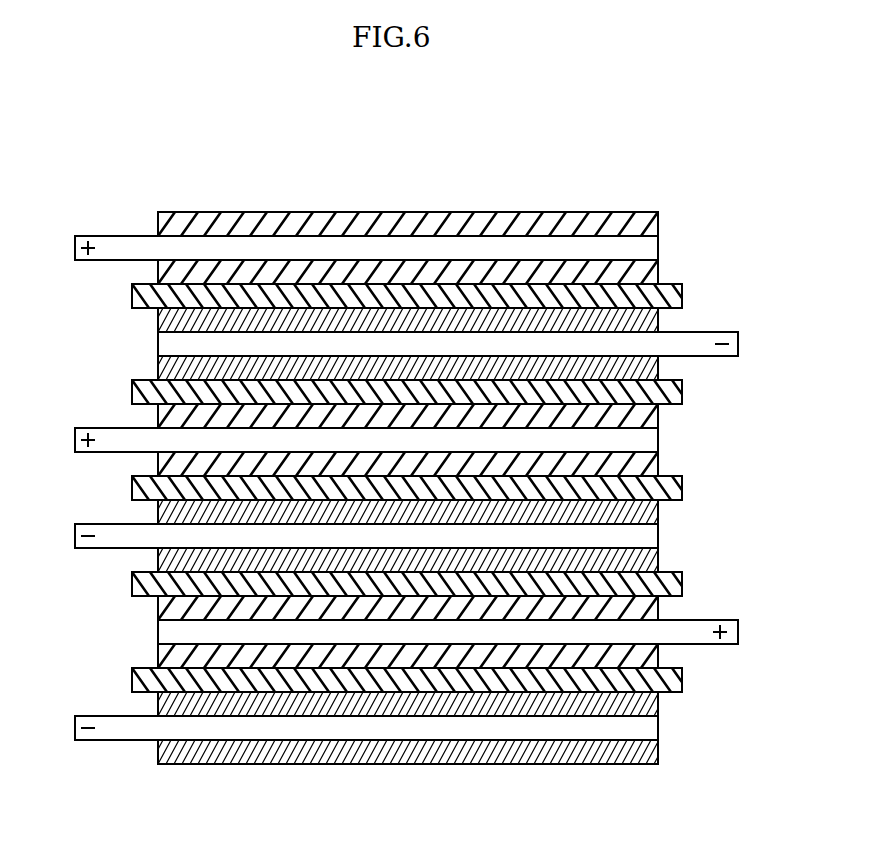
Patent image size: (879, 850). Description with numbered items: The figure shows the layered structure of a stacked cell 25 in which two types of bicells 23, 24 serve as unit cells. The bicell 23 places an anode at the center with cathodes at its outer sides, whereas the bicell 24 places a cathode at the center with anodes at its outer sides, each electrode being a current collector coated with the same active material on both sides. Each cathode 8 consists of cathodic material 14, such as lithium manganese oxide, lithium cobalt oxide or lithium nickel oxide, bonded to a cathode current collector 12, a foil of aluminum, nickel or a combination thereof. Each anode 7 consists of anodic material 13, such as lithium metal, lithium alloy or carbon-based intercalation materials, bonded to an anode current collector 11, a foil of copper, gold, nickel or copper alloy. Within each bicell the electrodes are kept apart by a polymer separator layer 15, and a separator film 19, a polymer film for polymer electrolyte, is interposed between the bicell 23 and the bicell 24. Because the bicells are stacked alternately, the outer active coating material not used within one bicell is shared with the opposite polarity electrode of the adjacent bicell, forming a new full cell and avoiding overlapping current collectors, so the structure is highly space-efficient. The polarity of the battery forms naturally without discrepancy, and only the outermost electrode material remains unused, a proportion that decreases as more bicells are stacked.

The anode 7 is at (808, 302).
The cathode 8 is at (738, 212).
The anode current collector 11 is at (740, 352).
The cathode current collector 12 is at (655, 248).
The anodic material 13 is at (660, 321).
The cathodic material 14 is at (658, 219).
The separator layer 15 is at (133, 296).
The separator film 19 is at (133, 493).
The bicell 23 is at (62, 213).
The bicell 24 is at (62, 503).
The stacked cell 25 is at (782, 486).